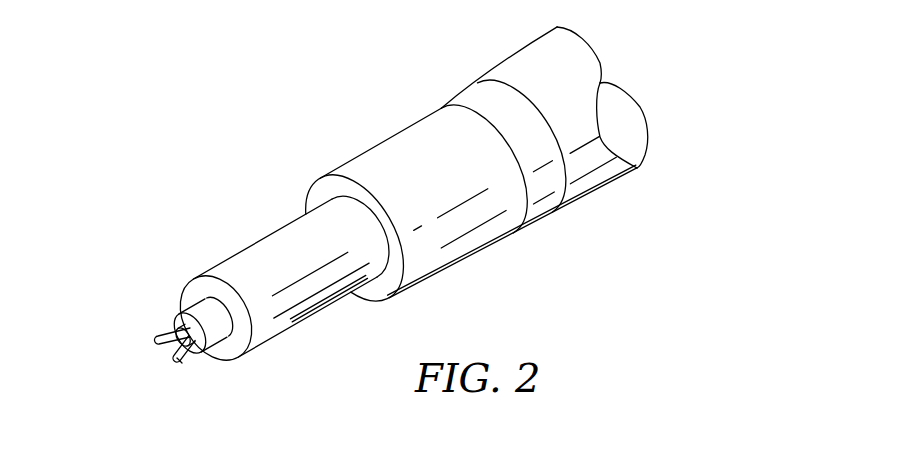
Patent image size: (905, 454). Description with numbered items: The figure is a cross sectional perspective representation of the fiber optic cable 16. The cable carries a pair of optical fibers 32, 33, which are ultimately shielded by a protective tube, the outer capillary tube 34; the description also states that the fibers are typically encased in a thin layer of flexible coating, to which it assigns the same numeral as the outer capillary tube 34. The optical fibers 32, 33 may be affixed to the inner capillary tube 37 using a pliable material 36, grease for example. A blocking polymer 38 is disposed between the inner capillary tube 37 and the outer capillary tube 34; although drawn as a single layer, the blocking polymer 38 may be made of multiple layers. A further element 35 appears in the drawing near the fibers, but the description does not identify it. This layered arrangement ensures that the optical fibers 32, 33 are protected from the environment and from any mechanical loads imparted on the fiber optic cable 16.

The fiber optic cable 16 is at (687, 135).
The optical fiber 32 is at (157, 344).
The optical fiber 33 is at (182, 363).
The outer capillary tube 34 is at (518, 57).
The third tube 35 is at (192, 350).
The pliable material 36 is at (182, 318).
The inner capillary tube 37 is at (271, 237).
The blocking polymer 38 is at (378, 145).